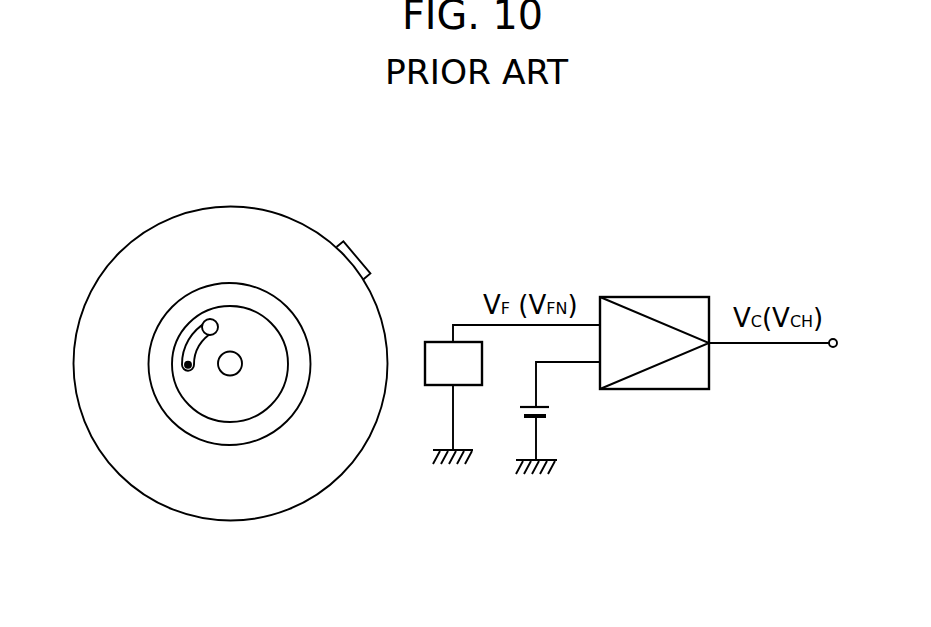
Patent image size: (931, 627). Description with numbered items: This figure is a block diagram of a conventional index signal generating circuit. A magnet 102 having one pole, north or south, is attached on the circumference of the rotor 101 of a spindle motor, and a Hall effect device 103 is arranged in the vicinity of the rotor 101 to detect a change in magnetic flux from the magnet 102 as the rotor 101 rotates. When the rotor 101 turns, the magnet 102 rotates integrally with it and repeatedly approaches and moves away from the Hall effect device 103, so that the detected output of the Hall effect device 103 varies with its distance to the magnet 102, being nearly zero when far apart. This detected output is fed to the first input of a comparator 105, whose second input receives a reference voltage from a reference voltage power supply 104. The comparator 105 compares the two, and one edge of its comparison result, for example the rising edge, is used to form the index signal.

The rotor 101 is at (288, 226).
The magnet 102 is at (362, 252).
The Hall effect device 103 is at (435, 342).
The reference voltage power supply 104 is at (553, 415).
The comparator 105 is at (655, 297).